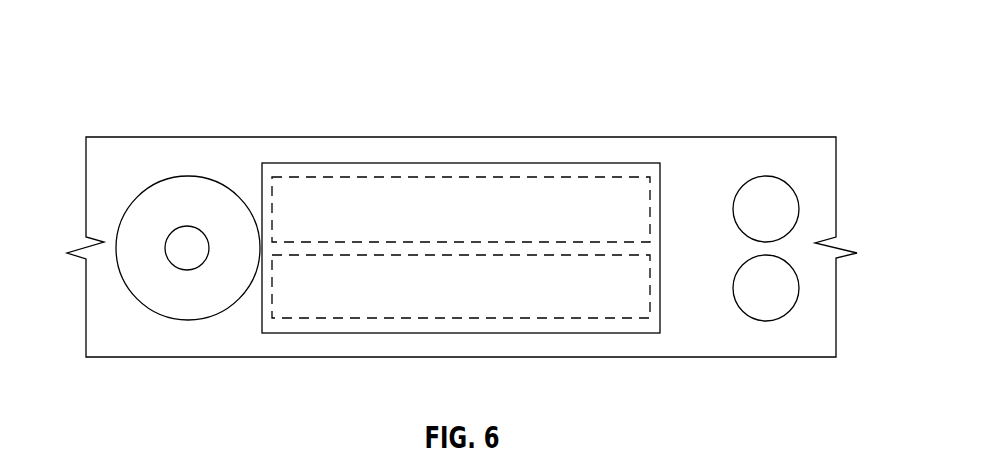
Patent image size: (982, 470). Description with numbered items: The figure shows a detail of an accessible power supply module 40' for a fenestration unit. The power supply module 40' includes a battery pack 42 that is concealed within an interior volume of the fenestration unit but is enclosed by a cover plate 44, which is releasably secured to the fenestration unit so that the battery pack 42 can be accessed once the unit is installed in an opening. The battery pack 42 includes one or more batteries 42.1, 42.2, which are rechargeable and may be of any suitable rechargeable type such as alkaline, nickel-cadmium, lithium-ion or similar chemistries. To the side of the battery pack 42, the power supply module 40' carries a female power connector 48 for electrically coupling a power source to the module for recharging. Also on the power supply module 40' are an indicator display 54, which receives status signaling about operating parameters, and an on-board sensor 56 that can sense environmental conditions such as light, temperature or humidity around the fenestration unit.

The power supply module 40' is at (462, 219).
The female power connector 48 is at (188, 190).
The cover plate 44 is at (633, 168).
The battery pack 42 is at (389, 289).
The battery 42.1 is at (435, 221).
The battery 42.2 is at (435, 301).
The indicator display 54 is at (763, 190).
The sensor 56 is at (770, 307).